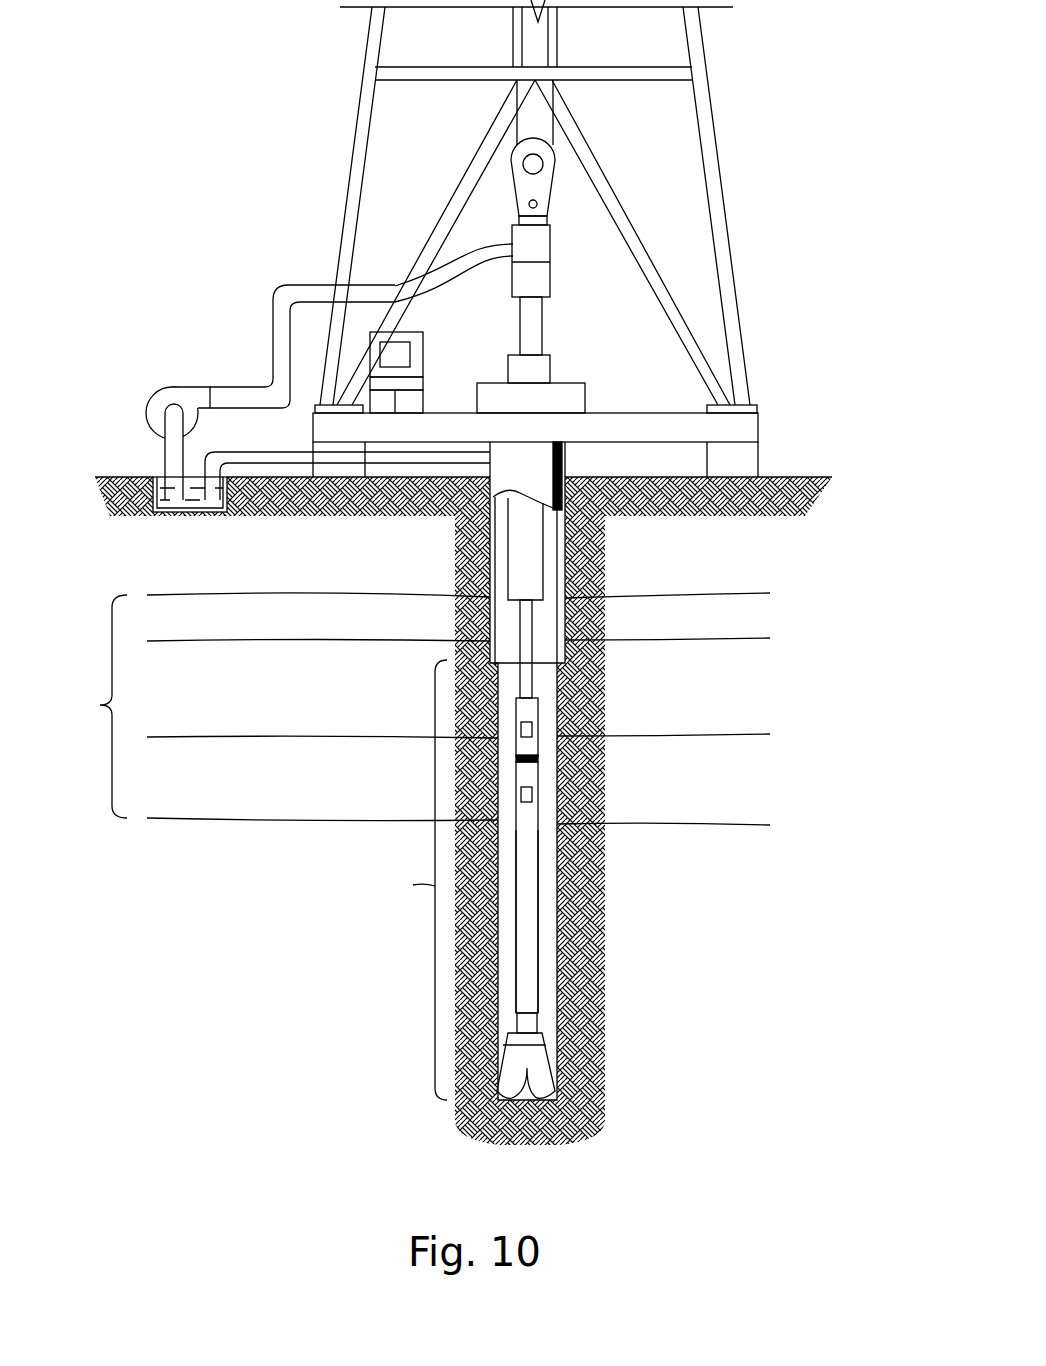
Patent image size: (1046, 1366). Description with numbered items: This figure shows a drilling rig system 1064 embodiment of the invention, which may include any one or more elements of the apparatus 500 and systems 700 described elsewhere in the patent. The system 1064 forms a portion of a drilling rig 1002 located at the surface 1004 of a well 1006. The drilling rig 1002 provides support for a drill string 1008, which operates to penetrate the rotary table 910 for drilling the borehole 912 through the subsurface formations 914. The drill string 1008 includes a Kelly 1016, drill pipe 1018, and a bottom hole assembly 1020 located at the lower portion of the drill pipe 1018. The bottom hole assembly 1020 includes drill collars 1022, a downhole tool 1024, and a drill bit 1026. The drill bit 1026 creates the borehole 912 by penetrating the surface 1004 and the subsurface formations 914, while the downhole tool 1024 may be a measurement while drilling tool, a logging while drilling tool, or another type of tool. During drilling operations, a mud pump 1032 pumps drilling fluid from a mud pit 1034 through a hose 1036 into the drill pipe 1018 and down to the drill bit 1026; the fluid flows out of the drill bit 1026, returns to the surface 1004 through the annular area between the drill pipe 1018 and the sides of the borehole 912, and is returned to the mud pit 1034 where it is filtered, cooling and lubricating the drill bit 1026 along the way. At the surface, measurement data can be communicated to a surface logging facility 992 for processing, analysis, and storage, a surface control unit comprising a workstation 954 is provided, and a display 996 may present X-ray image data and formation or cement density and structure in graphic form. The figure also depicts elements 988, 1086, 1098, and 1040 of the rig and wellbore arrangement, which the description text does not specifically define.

The drilling rig system 1064 is at (224, 98).
The derrick 988 is at (710, 97).
The drilling rig 1002 is at (732, 198).
The Kelly 1016 is at (543, 320).
The kelly bushing 1098 is at (550, 367).
The rotary table 910 is at (490, 383).
The rig floor 1086 is at (760, 412).
The surface 1004 is at (782, 475).
The surface logging facility 992 is at (413, 330).
The workstation 954 is at (425, 343).
The display 996 is at (412, 356).
The hose 1036 is at (278, 333).
The mud pump 1032 is at (180, 387).
The mud pit 1034 is at (178, 507).
The wellbore 1040 is at (549, 692).
The well 1006 is at (570, 472).
The drill collars 1022 is at (543, 556).
The drill pipe 1018 is at (528, 637).
The apparatus 500 is at (542, 712).
The system 700 is at (542, 800).
The drill string 1008 is at (543, 882).
The bottom hole assembly 1020 is at (401, 880).
The borehole 912 is at (560, 963).
The subsurface formations 914 is at (409, 709).
The downhole tool 1024 is at (527, 995).
The drill bit 1026 is at (534, 1053).